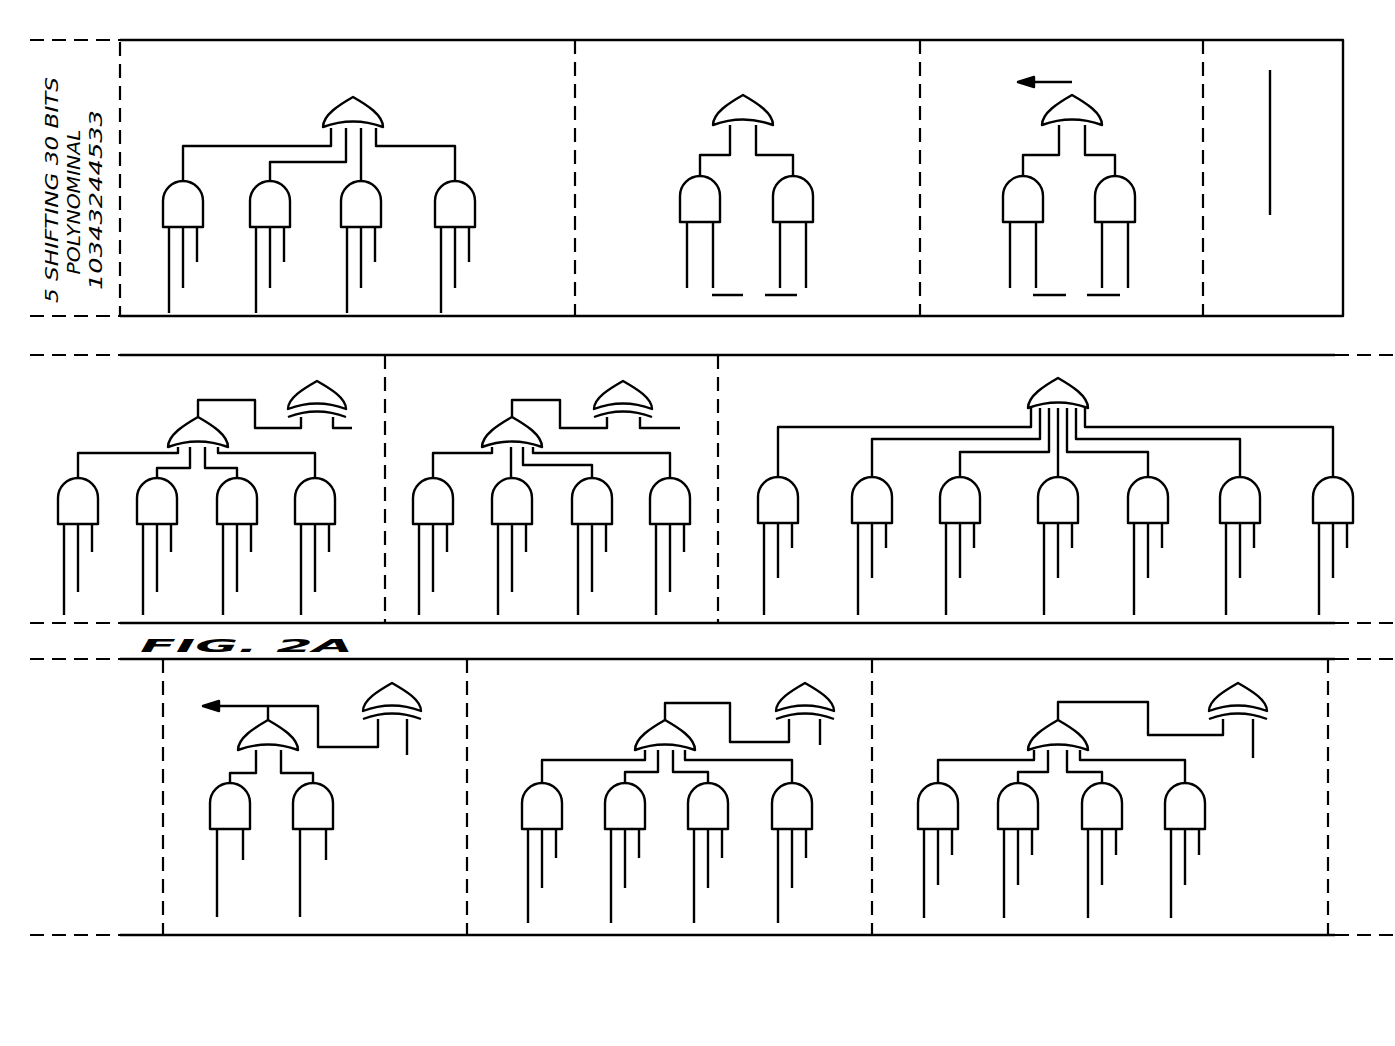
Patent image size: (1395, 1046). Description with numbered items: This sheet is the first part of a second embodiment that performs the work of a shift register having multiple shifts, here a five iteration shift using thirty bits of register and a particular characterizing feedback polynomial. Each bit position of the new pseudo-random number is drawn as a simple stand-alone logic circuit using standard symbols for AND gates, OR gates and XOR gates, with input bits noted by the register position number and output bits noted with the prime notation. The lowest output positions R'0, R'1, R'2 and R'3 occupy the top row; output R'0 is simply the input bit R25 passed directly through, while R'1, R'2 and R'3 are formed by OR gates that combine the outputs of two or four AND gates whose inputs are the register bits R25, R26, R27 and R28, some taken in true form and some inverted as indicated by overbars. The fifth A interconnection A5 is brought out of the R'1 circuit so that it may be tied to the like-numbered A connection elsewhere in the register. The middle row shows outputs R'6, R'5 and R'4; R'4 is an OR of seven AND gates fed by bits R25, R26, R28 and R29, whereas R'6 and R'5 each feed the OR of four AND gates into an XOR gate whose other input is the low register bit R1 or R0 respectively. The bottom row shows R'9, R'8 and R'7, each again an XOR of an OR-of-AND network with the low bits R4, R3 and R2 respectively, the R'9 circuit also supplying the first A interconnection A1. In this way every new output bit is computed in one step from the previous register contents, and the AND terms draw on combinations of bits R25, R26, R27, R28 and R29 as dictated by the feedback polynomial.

The output bit R0' R'0 is at (1271, 142).
The output bit R1' R'1 is at (1070, 178).
The output bit R2' R'2 is at (750, 178).
The output bit R3' R'3 is at (336, 181).
The output bit R4' R'4 is at (1072, 486).
The output bit R5' R'5 is at (568, 487).
The output bit R6' R'6 is at (218, 487).
The output bit R7' R'7 is at (1105, 789).
The output bit R8' R'8 is at (685, 789).
The output bit R9' R'9 is at (307, 789).
The A-1 interconnection A1 is at (222, 706).
The A-5 interconnection A5 is at (1028, 82).
The input bit R0 is at (674, 428).
The input bit R1 is at (355, 428).
The input bit R2 is at (1273, 739).
The input bit R3 is at (834, 740).
The input bit R4 is at (422, 740).
The input bit R25 is at (1269, 155).
The input bit R26 is at (467, 540).
The input bit R27 is at (454, 560).
The input bit R28 is at (217, 246).
The input bit R29 is at (440, 571).